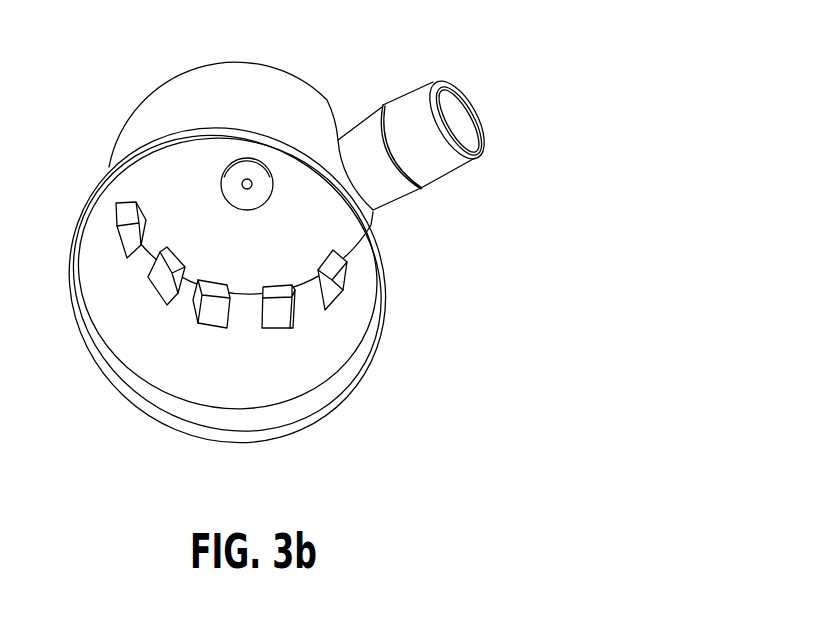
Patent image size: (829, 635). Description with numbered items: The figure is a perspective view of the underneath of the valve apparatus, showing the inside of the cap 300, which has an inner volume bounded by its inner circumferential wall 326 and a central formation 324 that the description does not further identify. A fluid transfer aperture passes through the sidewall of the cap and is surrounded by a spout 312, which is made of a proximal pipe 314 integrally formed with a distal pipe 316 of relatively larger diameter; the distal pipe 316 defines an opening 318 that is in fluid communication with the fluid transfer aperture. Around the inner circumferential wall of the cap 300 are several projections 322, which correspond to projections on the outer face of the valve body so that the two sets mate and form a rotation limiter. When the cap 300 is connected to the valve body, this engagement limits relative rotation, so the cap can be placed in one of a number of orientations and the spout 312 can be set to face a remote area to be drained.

The cap 300 is at (562, 62).
The spout 312 is at (432, 193).
The tube body 314 is at (368, 135).
The distal pipe 316 is at (408, 100).
The opening 318 is at (458, 121).
The projections 322 is at (288, 332).
The central boss 324 is at (221, 166).
The housing rim 326 is at (163, 408).